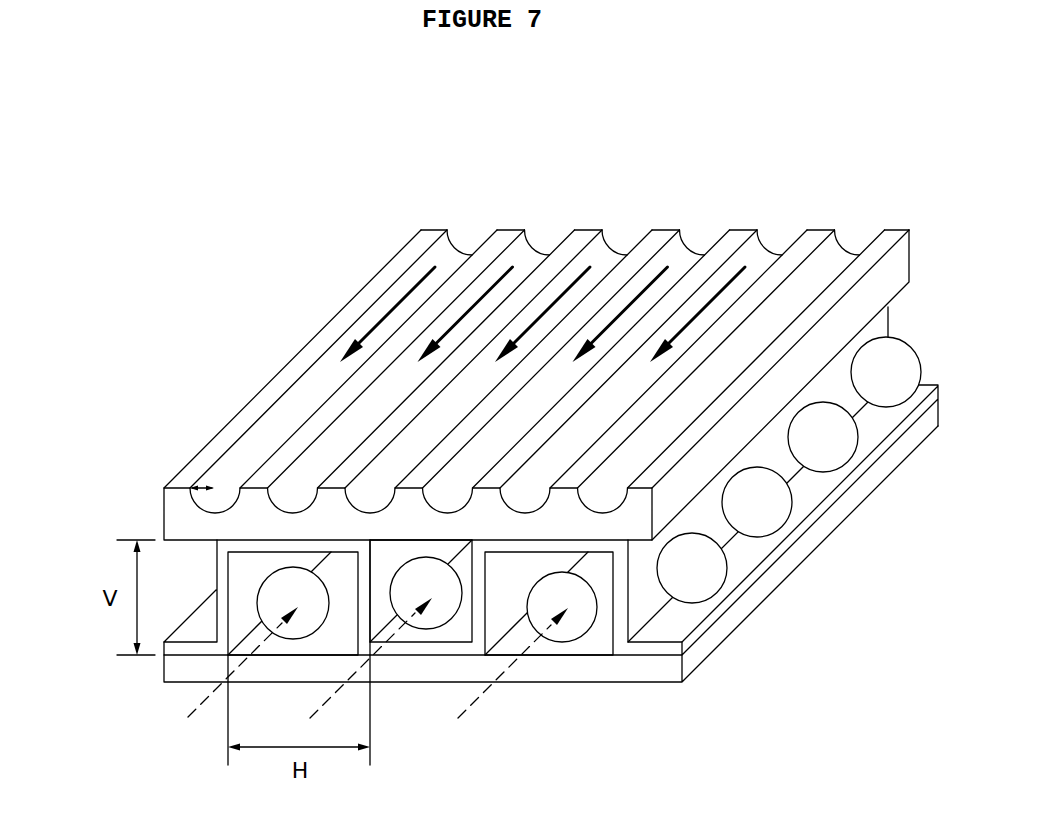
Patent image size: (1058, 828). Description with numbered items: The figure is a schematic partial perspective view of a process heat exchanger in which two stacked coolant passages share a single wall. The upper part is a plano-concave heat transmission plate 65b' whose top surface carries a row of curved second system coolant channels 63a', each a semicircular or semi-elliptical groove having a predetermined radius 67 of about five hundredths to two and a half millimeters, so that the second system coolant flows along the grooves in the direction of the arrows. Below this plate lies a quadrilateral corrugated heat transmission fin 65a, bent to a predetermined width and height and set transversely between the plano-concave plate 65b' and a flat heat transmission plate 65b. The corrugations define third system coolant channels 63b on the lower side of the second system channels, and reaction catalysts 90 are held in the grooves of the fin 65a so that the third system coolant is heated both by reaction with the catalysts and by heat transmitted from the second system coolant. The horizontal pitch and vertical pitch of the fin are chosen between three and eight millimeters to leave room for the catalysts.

The second system coolant channel 63a' is at (600, 252).
The radius 67 is at (203, 486).
The plano-concave heat transmission plate 65b' is at (483, 385).
The third system coolant channel 63b is at (597, 642).
The corrugated heat transmission fin 65a is at (420, 648).
The flat heat transmission plate 65b is at (517, 589).
The reaction catalysts 90 is at (757, 502).